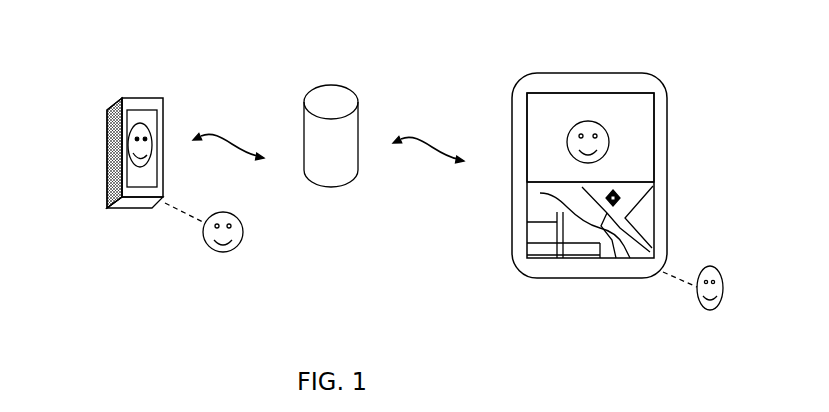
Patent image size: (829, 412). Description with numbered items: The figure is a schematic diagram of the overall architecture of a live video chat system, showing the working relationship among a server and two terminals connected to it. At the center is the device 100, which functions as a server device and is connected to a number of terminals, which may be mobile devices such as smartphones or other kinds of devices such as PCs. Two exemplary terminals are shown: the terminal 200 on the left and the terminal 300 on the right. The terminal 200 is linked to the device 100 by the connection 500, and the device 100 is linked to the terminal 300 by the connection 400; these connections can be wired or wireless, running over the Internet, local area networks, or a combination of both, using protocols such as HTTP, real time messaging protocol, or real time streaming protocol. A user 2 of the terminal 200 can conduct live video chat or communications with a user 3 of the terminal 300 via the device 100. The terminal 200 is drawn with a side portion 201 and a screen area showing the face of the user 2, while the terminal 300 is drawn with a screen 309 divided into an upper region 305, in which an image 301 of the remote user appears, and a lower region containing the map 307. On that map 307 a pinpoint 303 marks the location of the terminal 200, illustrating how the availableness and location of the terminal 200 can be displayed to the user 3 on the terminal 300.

The device 100 is at (324, 82).
The terminal 200 is at (143, 92).
The imaging unit of first terminal device 201 is at (102, 160).
The user 2 is at (248, 237).
The user 3 is at (707, 250).
The terminal 300 is at (575, 162).
The face image of first user 301 is at (577, 112).
The pinpoint 303 is at (628, 193).
The first display area 305 is at (538, 160).
The map 307 is at (545, 210).
The display screen 309 is at (538, 92).
The connection 400 is at (422, 130).
The connection 500 is at (220, 127).